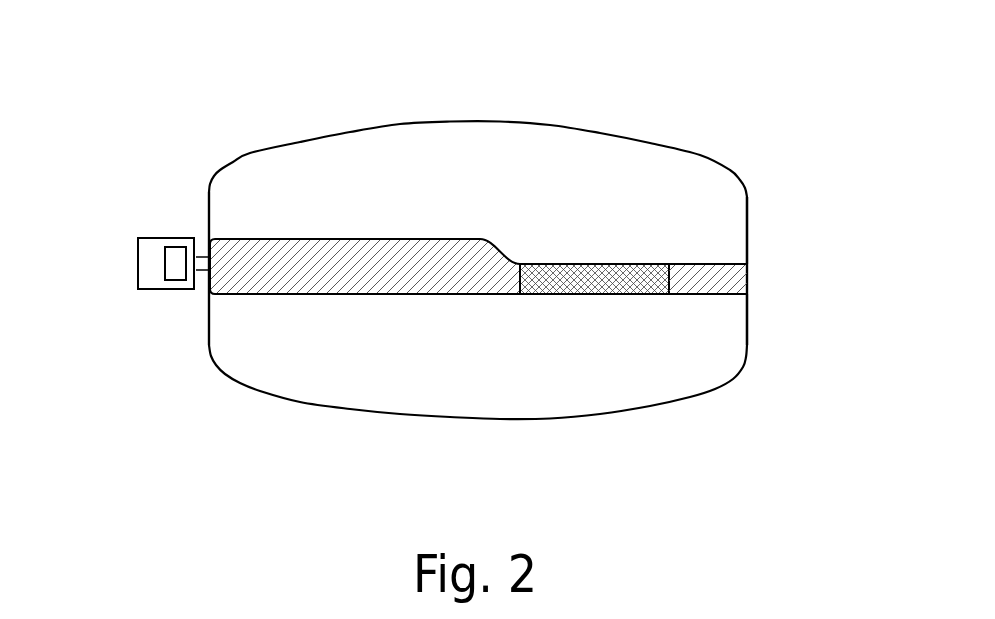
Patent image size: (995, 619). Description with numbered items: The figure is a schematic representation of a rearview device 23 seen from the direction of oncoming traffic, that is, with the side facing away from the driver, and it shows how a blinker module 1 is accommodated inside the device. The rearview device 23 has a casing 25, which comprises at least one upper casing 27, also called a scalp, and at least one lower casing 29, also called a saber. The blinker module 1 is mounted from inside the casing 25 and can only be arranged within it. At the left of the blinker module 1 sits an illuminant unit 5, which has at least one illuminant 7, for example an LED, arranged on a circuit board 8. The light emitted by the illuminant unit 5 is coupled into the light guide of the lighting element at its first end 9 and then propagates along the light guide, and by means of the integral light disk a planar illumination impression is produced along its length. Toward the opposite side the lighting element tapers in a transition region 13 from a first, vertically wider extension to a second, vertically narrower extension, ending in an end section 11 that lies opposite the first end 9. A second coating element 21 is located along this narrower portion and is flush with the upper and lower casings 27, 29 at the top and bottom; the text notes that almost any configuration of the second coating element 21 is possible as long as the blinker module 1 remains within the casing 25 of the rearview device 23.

The blinker module 1 is at (167, 163).
The illuminant unit 5 is at (131, 307).
The illuminant 7 is at (175, 265).
The circuit board 8 is at (148, 259).
The first end 9 is at (247, 302).
The end section 11 is at (676, 250).
The transition region 13 is at (505, 242).
The second coating element 21 is at (595, 294).
The rearview device 23 is at (225, 103).
The casing 25 is at (770, 143).
The upper casing 27 is at (725, 232).
The lower casing 29 is at (720, 352).